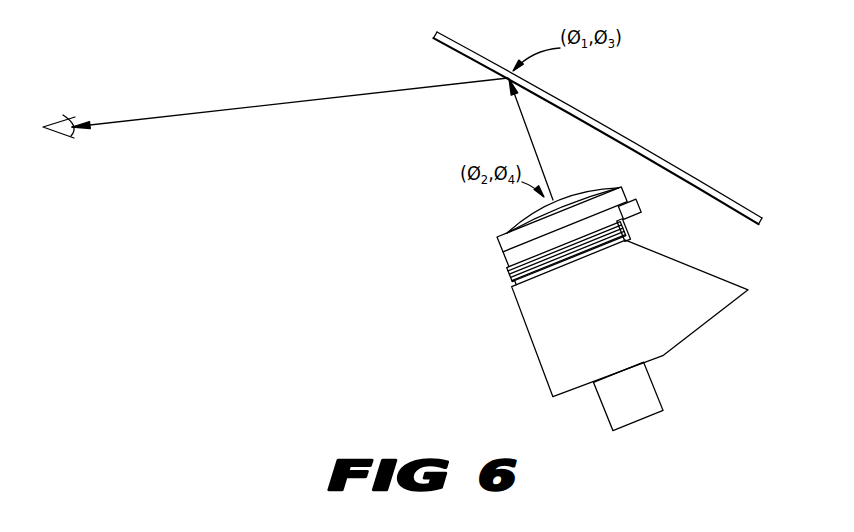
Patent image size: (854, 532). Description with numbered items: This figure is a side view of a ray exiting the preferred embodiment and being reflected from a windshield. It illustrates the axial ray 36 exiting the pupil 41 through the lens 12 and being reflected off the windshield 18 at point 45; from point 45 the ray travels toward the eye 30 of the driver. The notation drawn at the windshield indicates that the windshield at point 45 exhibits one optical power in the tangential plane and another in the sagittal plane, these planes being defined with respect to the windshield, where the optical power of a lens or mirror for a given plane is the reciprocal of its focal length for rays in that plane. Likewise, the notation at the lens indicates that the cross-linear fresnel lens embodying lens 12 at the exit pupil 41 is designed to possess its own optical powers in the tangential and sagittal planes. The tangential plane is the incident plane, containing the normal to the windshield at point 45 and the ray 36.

The lens 12 is at (563, 196).
The windshield 18 is at (627, 139).
The eye 30 is at (59, 113).
The axial ray 36 is at (222, 110).
The pupil 41 is at (502, 208).
The point 45 is at (505, 76).